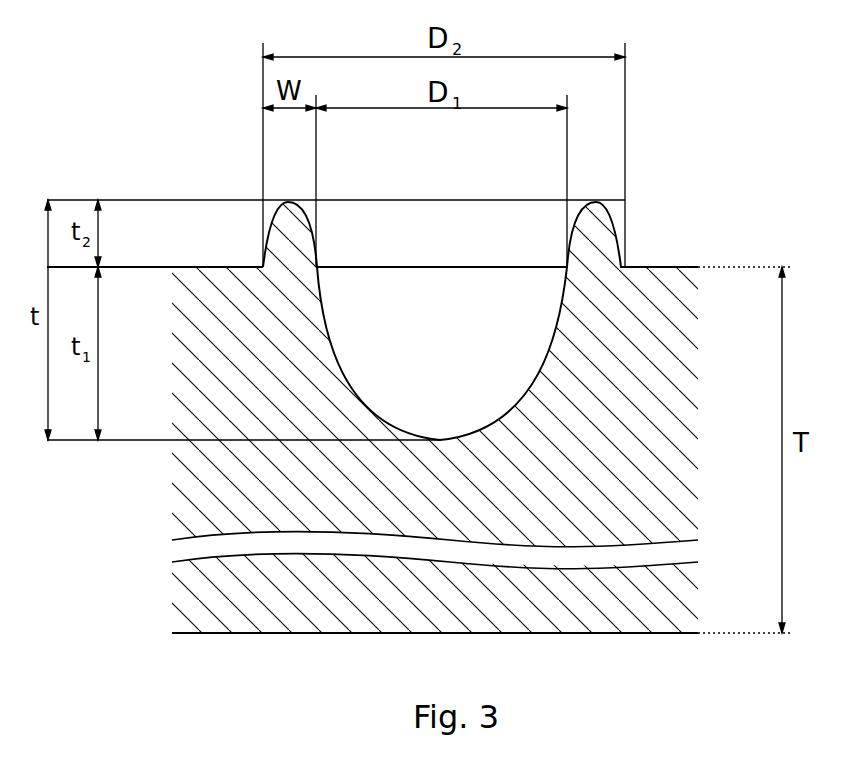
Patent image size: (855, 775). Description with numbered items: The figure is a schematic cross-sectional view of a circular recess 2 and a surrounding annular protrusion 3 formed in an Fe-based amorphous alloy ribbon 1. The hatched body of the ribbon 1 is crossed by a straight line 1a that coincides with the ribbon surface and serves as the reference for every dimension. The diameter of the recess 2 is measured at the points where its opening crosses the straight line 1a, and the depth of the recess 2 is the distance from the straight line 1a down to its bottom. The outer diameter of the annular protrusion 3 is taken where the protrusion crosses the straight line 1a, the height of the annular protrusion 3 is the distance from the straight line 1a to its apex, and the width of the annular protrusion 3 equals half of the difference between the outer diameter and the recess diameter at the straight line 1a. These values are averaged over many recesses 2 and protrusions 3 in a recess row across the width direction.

The Fe-based amorphous alloy ribbon 1 is at (657, 318).
The straight line 1a is at (407, 268).
The recess 2 is at (470, 250).
The annular protrusion 3 is at (600, 203).